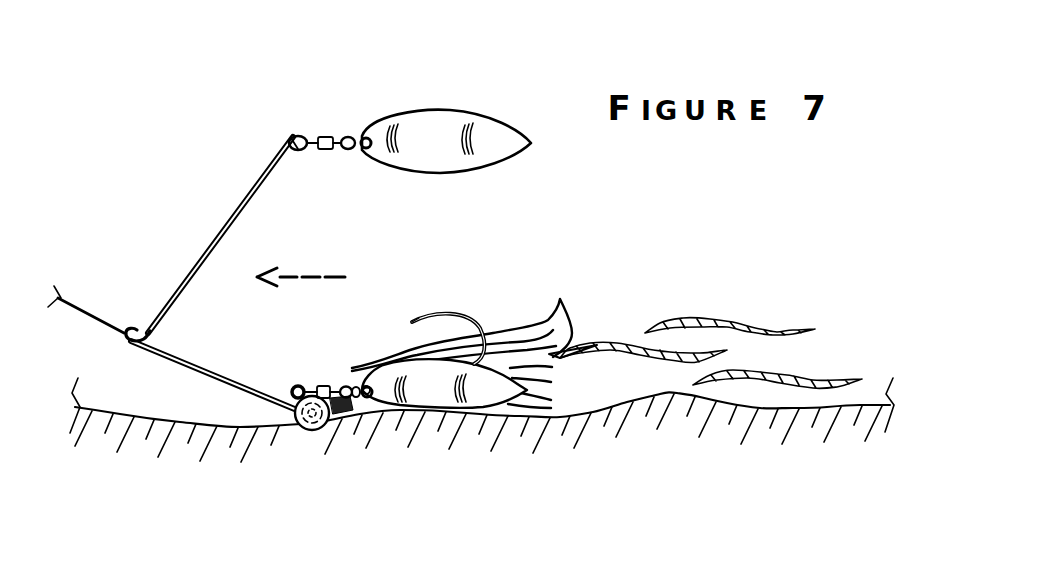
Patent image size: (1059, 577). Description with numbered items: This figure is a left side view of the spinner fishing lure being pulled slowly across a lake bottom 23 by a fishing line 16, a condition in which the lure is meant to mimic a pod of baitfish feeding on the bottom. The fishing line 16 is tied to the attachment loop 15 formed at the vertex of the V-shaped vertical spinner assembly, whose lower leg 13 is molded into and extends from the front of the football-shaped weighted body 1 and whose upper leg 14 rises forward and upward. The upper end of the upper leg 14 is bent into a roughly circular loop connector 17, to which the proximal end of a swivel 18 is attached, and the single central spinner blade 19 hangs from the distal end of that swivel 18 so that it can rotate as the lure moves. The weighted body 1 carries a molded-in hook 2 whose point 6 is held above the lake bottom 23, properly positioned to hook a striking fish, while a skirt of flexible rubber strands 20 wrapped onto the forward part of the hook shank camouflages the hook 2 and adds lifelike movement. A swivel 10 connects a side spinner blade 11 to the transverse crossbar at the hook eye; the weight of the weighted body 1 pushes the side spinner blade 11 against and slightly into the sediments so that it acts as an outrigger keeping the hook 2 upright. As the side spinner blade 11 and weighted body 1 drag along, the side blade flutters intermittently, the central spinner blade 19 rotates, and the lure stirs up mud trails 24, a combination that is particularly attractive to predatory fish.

The weighted body 1 is at (312, 419).
The hook 2 is at (480, 305).
The point 6 is at (450, 318).
The swivel 10 is at (320, 390).
The side spinner blade 11 is at (414, 408).
The lower leg 13 is at (214, 378).
The upper leg 14 is at (222, 236).
The attachment loop 15 is at (138, 333).
The fishing line 16 is at (86, 316).
The loop connector 17 is at (295, 139).
The swivel 18 is at (330, 137).
The central spinner blade 19 is at (426, 153).
The flexible rubber strands 20 is at (548, 338).
The lake bottom 23 is at (182, 420).
The mud trails 24 is at (827, 380).